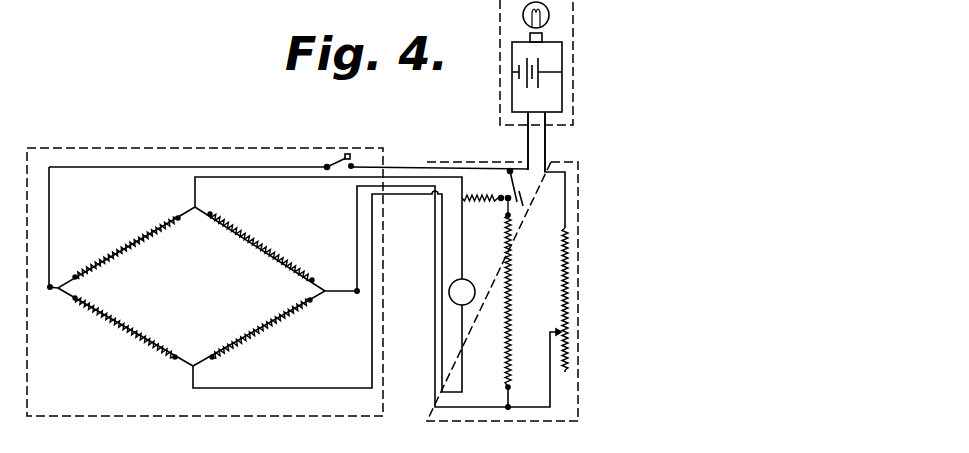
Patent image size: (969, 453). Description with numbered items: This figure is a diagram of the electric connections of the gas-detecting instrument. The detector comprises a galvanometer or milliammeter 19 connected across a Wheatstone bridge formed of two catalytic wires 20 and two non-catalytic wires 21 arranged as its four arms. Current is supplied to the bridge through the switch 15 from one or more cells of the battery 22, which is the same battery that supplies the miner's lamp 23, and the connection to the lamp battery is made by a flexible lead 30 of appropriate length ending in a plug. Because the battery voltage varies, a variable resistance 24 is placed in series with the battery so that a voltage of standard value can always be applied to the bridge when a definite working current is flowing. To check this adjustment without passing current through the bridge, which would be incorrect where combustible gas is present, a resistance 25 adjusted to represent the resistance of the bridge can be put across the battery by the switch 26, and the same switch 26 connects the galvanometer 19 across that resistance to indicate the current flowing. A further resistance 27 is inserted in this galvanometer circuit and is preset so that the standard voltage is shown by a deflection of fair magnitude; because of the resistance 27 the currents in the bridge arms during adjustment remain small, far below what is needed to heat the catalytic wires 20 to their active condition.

The switch 15 is at (340, 158).
The galvanometer 19 is at (470, 302).
The catalytic wires 20 is at (243, 333).
The non-catalytic wires 21 is at (142, 315).
The battery 22 is at (542, 82).
The miner's lamp 23 is at (547, 27).
The variable resistance 24 is at (567, 275).
The resistance 25 is at (512, 260).
The switch 26 is at (524, 193).
The further resistance 27 is at (493, 205).
The flexible lead 30 is at (528, 142).